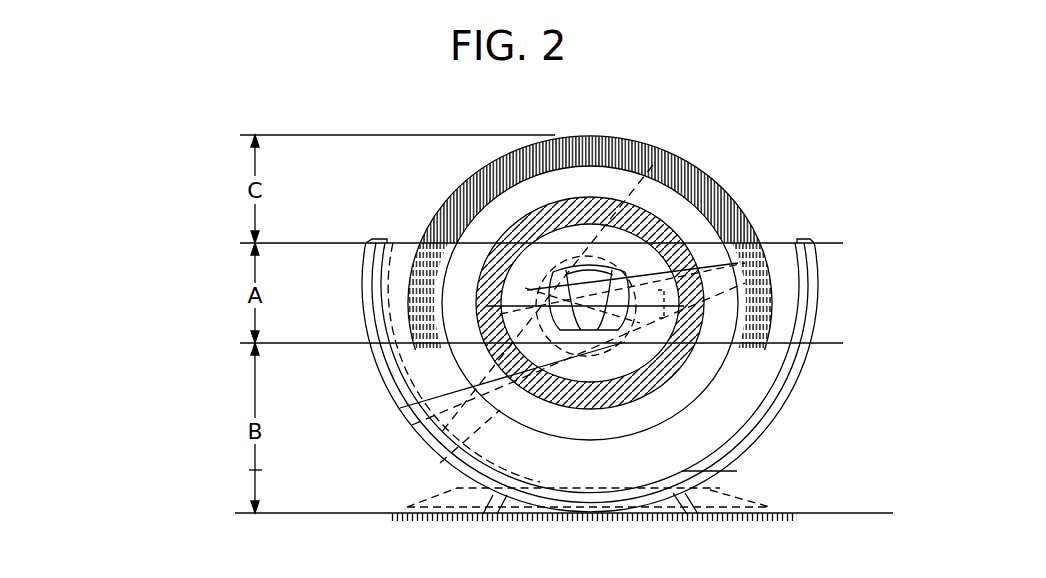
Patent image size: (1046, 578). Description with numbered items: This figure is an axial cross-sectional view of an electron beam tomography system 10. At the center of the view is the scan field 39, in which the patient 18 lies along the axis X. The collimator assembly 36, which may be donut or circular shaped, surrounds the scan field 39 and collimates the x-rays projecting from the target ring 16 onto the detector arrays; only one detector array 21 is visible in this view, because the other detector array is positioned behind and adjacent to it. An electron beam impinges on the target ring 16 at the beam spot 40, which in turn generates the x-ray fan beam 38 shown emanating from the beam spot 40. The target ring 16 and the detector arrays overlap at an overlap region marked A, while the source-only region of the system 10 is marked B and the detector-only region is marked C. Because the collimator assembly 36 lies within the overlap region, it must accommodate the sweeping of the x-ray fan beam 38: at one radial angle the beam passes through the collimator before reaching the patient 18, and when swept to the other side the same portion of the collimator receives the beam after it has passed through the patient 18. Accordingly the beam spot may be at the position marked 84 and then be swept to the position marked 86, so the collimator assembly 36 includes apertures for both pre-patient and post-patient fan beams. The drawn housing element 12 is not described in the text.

The electron beam tomography system 10 is at (180, 272).
The housing 12 is at (368, 267).
The target ring 16 is at (756, 438).
The patient 18 is at (738, 263).
The detector array 21 is at (486, 170).
The collimator assembly 36 is at (653, 165).
The x-ray fan beam 38 is at (412, 425).
The scan field 39 is at (400, 408).
The beam spot 40 is at (440, 463).
The beam spot position 84 is at (390, 313).
The beam spot position 86 is at (798, 312).